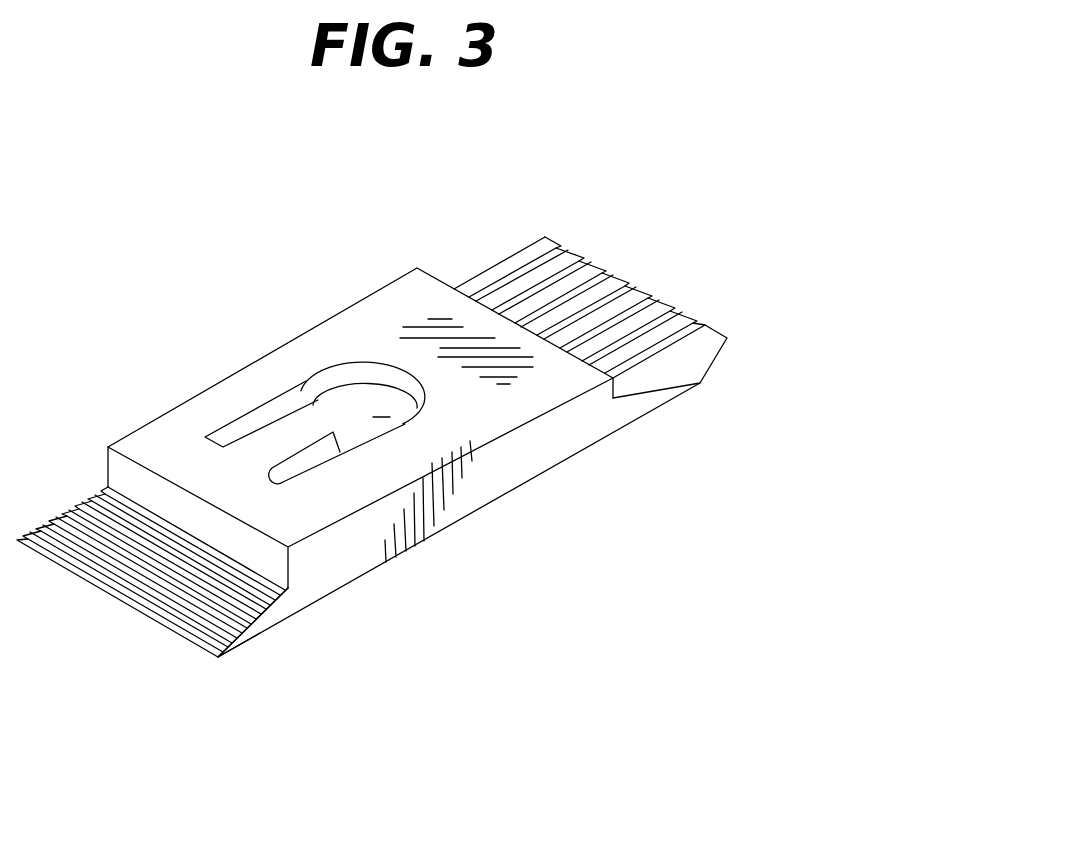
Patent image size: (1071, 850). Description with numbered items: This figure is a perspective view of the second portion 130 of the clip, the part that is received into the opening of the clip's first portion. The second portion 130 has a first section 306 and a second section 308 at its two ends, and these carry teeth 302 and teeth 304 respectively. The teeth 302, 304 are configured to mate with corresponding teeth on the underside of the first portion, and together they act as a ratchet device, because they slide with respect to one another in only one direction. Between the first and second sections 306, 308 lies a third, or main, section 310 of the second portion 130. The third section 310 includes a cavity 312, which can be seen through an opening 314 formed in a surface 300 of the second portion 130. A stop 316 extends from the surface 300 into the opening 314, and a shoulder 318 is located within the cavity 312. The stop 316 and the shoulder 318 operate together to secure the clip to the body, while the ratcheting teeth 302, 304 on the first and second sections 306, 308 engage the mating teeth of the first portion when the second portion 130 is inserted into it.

The second portion 130 is at (800, 110).
The surface 300 is at (313, 508).
The third section 310 is at (359, 271).
The teeth 304 is at (125, 603).
The teeth 302 is at (618, 287).
The first section 306 is at (721, 400).
The second section 308 is at (251, 655).
The stop 316 is at (277, 443).
The opening 314 is at (405, 422).
The cavity 312 is at (332, 408).
The shoulder 318 is at (362, 397).